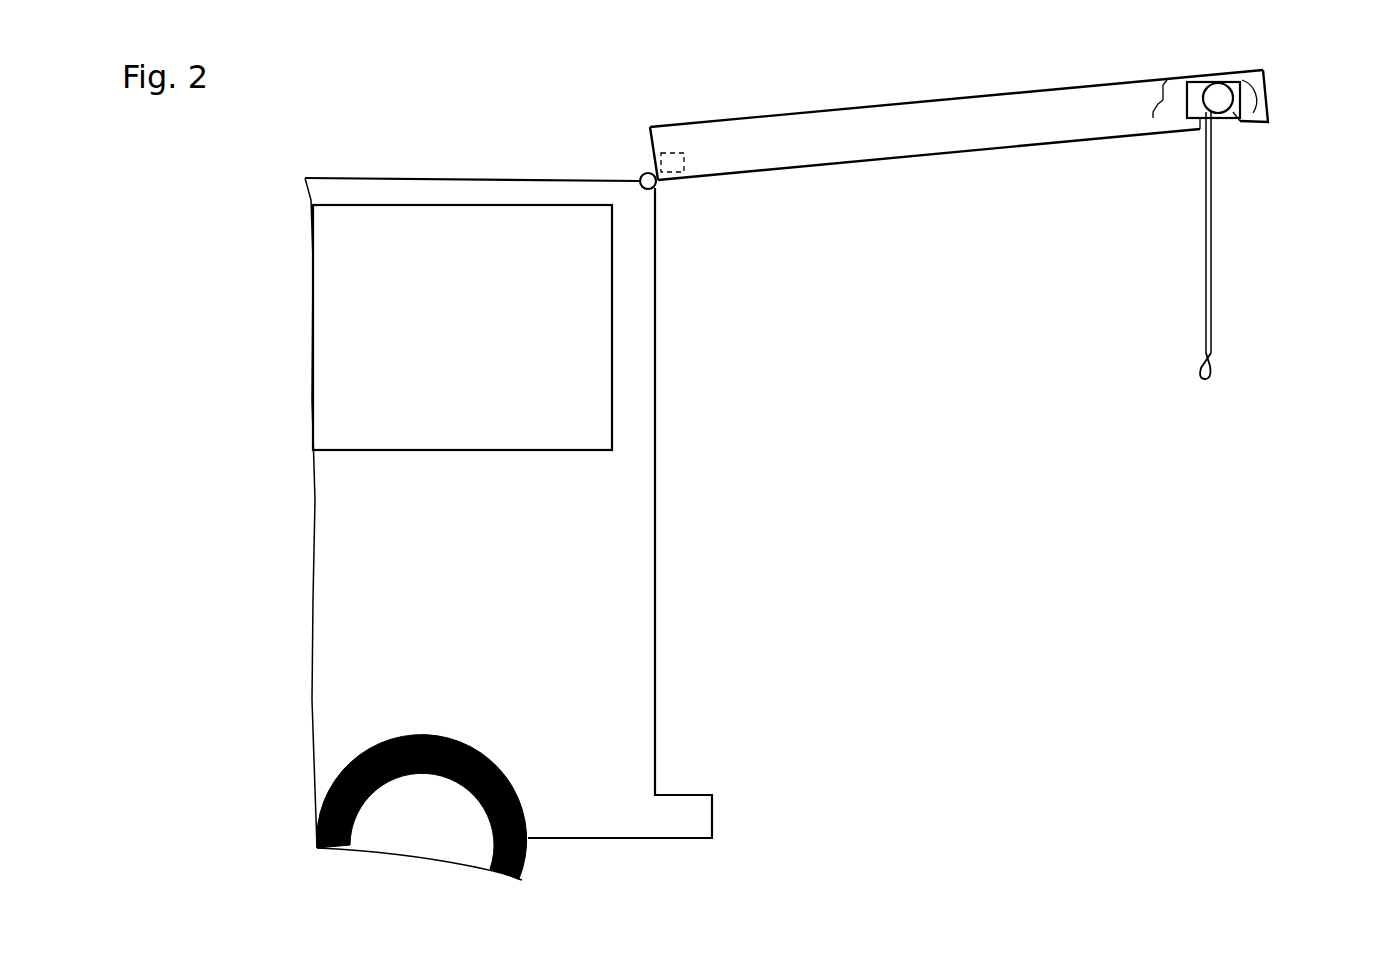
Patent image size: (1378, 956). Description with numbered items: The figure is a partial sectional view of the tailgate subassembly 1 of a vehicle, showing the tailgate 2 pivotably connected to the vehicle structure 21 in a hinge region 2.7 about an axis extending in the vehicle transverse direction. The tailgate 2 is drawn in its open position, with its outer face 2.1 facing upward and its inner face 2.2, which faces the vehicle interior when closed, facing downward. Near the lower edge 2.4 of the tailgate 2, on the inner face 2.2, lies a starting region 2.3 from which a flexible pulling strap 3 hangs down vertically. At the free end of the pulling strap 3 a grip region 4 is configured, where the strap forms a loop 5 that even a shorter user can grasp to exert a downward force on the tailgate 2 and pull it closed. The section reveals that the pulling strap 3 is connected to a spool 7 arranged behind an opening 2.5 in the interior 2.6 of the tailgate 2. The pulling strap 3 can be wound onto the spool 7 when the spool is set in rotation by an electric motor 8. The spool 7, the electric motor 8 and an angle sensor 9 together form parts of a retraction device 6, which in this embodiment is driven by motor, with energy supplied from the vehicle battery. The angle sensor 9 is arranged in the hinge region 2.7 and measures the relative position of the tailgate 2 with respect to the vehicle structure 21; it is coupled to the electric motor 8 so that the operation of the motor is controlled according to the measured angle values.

The tailgate subassembly 1 is at (706, 68).
The tailgate 2 is at (949, 183).
The outer face 2.1 is at (963, 88).
The inner face 2.2 is at (973, 172).
The starting region 2.3 is at (1125, 184).
The lower edge 2.4 is at (1285, 103).
The opening 2.5 is at (1193, 137).
The interior 2.6 is at (1073, 108).
The hinge region 2.7 is at (640, 172).
The pulling strap 3 is at (1208, 280).
The grip region 4 is at (1159, 393).
The loop 5 is at (1188, 355).
The retraction device 6 is at (1230, 62).
The spool 7 is at (1233, 120).
The electric motor 8 is at (1185, 100).
The angle sensor 9 is at (684, 153).
The vehicle structure 21 is at (446, 178).